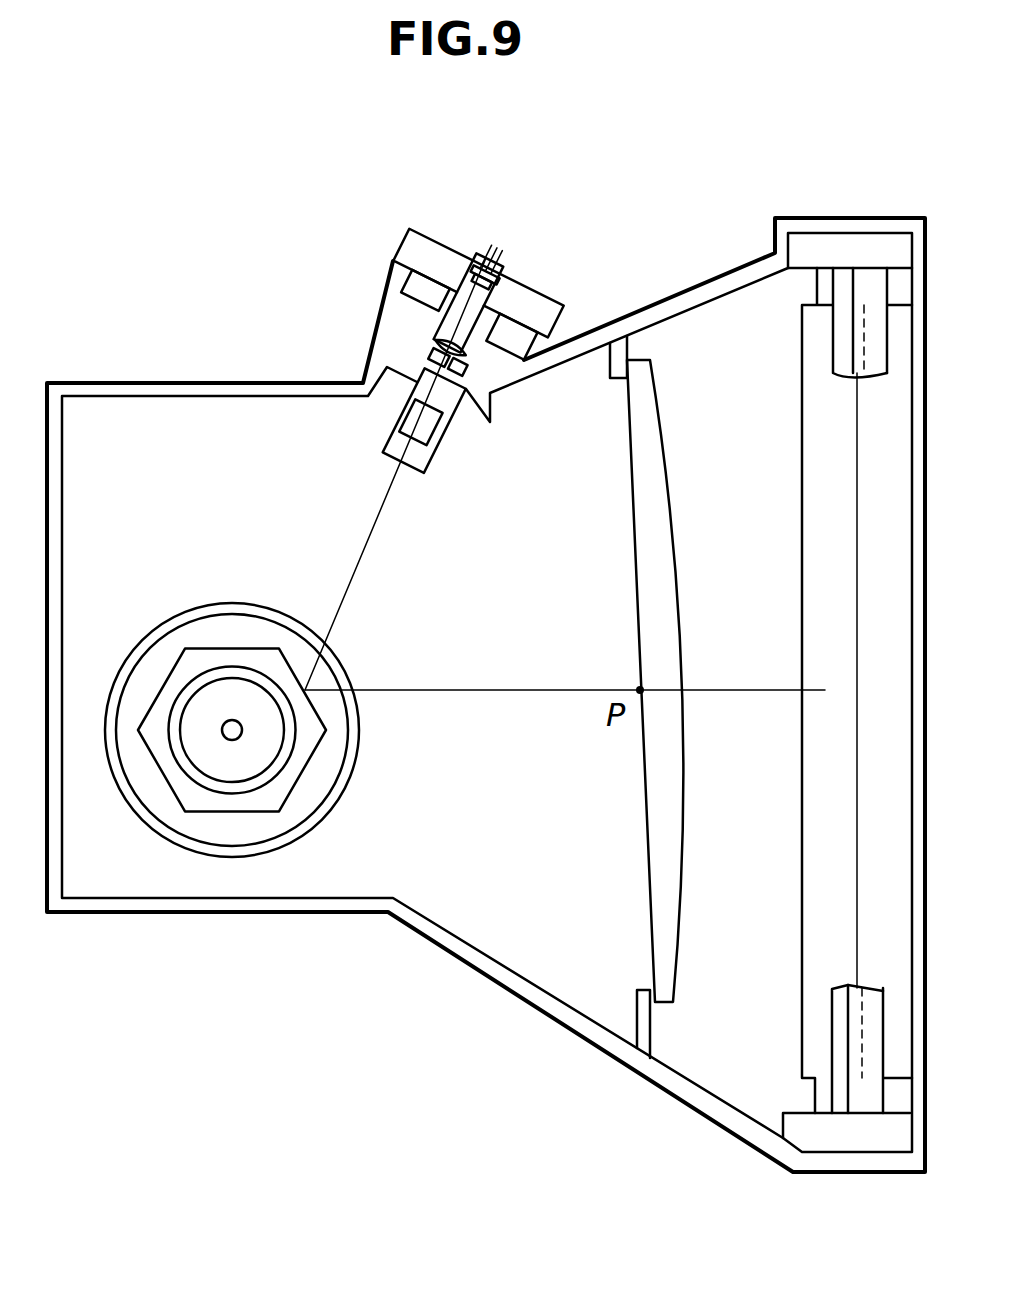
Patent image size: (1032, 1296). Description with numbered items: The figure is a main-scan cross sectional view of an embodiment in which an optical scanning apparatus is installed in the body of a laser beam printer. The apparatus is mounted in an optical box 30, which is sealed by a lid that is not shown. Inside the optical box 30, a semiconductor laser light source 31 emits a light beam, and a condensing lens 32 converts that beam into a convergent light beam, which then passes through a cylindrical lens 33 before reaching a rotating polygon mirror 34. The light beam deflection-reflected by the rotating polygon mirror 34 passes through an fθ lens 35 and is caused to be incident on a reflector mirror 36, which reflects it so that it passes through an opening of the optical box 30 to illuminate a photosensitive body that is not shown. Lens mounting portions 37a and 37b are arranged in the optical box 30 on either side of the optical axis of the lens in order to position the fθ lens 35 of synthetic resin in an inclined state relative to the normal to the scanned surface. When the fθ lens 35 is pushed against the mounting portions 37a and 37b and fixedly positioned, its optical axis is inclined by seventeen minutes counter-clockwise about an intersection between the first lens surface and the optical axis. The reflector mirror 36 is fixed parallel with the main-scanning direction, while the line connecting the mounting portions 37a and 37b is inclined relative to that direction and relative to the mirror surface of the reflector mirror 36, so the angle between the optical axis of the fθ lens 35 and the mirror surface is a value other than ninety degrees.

The optical box 30 is at (232, 386).
The semiconductor laser light source 31 is at (507, 287).
The condensing lens 32 is at (445, 345).
The cylindrical lens 33 is at (395, 432).
The rotating polygon mirror 34 is at (305, 805).
The fθ lens 35 is at (646, 778).
The reflector mirror 36 is at (822, 318).
The lens mounting portion 37a is at (608, 366).
The lens mounting portion 37b is at (640, 1010).